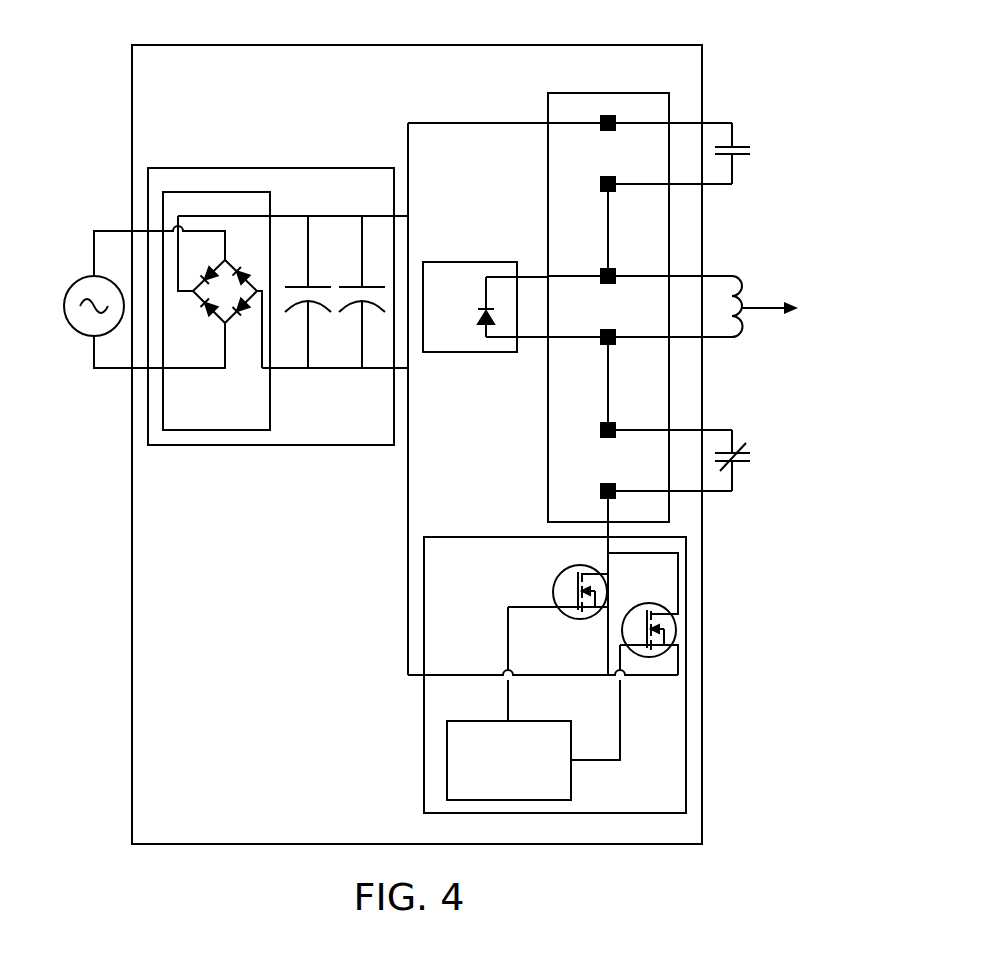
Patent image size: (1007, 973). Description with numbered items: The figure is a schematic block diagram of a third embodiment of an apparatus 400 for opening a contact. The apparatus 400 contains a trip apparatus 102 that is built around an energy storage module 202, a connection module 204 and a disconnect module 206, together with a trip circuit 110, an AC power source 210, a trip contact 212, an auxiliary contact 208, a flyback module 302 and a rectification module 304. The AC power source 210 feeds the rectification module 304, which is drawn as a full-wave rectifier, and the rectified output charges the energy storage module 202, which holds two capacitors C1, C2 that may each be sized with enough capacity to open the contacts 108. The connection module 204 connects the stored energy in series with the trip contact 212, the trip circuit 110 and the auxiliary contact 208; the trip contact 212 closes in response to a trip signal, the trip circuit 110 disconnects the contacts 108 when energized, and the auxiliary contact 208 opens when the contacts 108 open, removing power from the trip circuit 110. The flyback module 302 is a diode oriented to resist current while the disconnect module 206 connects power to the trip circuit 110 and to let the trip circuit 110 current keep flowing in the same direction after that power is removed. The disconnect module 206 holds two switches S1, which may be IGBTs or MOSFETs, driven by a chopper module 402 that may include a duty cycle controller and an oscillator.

The apparatus 400 is at (117, 45).
The trip apparatus 102 is at (417, 444).
The energy storage module 202 is at (271, 306).
The rectification module 304 is at (216, 311).
The AC power source 210 is at (123, 329).
The trip contact 212 is at (768, 153).
The trip circuit 110 is at (760, 276).
The contacts 108 is at (795, 332).
The flyback module 302 is at (485, 307).
The connection module 204 is at (570, 384).
The auxiliary contact 208 is at (773, 459).
The disconnect module 206 is at (555, 675).
The chopper module 402 is at (509, 760).
The capacitor C1 is at (305, 292).
The capacitor C2 is at (360, 292).
The switch S1 is at (593, 608).